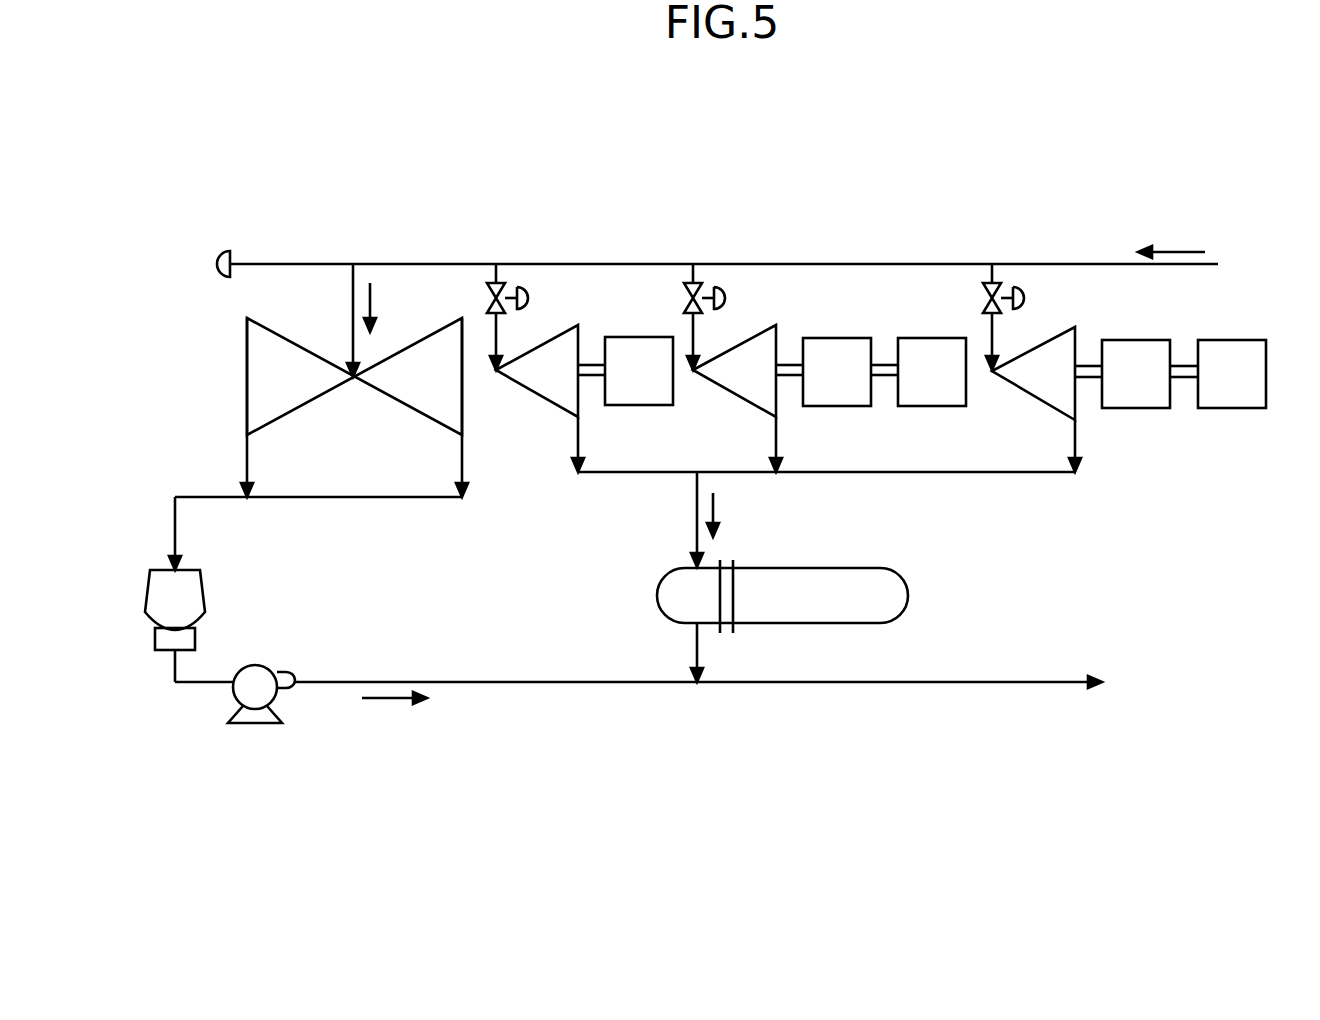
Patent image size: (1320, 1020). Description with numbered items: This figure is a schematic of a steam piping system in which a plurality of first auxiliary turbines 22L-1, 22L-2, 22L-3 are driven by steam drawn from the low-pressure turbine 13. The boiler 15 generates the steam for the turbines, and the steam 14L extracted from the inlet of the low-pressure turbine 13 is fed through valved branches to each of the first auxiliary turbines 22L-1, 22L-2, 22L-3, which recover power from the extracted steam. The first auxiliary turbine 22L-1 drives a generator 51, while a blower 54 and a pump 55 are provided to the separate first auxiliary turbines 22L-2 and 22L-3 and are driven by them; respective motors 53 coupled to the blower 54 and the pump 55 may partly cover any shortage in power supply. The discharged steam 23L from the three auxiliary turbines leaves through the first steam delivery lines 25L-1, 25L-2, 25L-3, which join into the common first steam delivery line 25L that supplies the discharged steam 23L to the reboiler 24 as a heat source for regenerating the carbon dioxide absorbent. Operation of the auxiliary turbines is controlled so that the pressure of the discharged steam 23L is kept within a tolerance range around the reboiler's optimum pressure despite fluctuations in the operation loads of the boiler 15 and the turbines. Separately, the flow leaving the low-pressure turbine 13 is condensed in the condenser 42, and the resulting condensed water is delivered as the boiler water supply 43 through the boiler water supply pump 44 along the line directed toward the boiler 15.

The low-pressure turbine 13 is at (285, 322).
The steam 14L is at (1172, 252).
The first auxiliary turbine 22L-1 is at (551, 322).
The first auxiliary turbine 22L-2 is at (748, 322).
The first auxiliary turbine 22L-3 is at (1048, 323).
The generator 51 is at (643, 337).
The motor 53 is at (933, 338).
The blower 54 is at (839, 338).
The pump 55 is at (1142, 340).
The first steam delivery line 25L-1 is at (578, 438).
The first steam delivery line 25L-2 is at (776, 438).
The first steam delivery line 25L-3 is at (1075, 438).
The first steam delivery line 25L is at (697, 517).
The discharged steam 23L is at (714, 508).
The reboiler 24 is at (847, 568).
The condenser 42 is at (206, 595).
The boiler water supply pump 44 is at (270, 666).
The boiler water supply 43 is at (385, 700).
The boiler 15 is at (1188, 684).